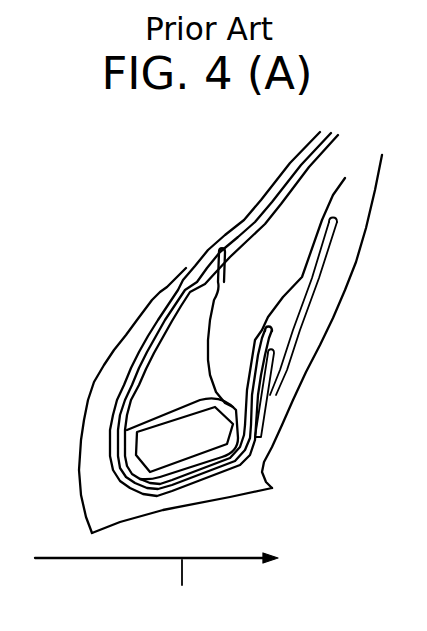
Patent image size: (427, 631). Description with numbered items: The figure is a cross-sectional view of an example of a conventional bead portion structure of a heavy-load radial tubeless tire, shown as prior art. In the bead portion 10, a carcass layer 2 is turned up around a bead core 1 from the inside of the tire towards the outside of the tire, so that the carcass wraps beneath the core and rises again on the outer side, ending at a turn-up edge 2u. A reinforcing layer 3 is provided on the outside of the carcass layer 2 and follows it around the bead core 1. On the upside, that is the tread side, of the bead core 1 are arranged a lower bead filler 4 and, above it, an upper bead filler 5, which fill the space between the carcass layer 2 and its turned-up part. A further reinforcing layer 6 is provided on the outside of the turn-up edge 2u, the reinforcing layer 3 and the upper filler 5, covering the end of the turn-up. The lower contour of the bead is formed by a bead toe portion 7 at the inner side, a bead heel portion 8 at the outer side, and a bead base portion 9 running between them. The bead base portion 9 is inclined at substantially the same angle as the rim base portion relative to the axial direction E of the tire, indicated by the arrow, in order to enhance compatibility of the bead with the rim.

The bead core 1 is at (157, 448).
The carcass layer 2 is at (143, 342).
The turn-up edge 2u is at (264, 332).
The reinforcing layer 3 is at (178, 292).
The lower bead filler 4 is at (158, 383).
The upper bead filler 5 is at (281, 252).
The reinforcing layer 6 is at (273, 372).
The bead toe portion 7 is at (91, 533).
The bead heel portion 8 is at (268, 486).
The bead base portion 9 is at (188, 505).
The bead portion 10 is at (181, 245).
The axial direction E is at (156, 587).